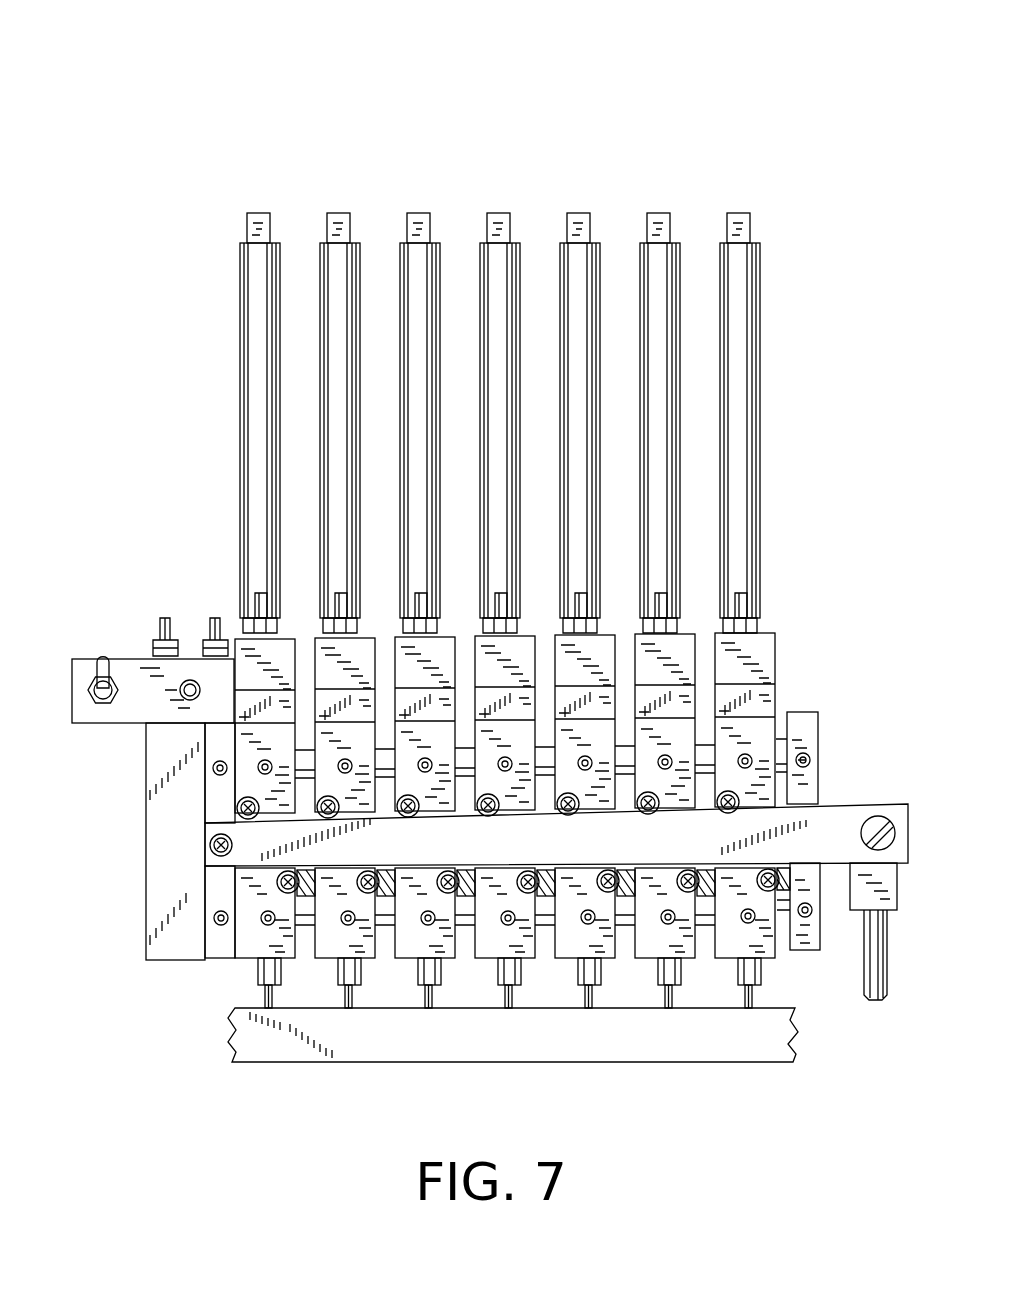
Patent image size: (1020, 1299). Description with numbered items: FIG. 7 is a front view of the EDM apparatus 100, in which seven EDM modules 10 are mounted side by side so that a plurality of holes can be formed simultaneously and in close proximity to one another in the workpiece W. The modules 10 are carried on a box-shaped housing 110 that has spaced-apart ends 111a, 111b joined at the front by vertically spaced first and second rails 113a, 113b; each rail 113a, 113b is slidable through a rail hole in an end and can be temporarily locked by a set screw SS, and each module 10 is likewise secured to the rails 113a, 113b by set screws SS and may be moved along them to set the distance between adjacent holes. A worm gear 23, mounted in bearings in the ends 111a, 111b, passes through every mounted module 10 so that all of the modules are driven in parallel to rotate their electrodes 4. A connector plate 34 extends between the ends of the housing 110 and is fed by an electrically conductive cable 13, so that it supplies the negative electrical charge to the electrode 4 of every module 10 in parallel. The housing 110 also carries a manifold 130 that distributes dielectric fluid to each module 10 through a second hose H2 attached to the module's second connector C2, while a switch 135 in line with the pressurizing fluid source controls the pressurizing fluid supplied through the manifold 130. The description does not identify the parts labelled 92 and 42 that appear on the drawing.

The EDM module 10 is at (500, 178).
The cylinder 92 is at (525, 333).
The EDM apparatus 100 is at (488, 569).
The second hose H2 is at (342, 600).
The second connector C2 is at (763, 626).
The manifold 130 is at (140, 659).
The switch 135 is at (102, 676).
The set screw SS is at (258, 766).
The housing 110 is at (143, 783).
The end 111a is at (812, 790).
The end 111b is at (208, 888).
The first rail 113a is at (782, 712).
The second rail 113b is at (784, 868).
The connector plate 34 is at (874, 804).
The cable 13 is at (884, 962).
The nozzle body 42 is at (257, 963).
The electrode 4 is at (264, 998).
The worm gear 23 is at (312, 885).
The workpiece W is at (790, 1040).